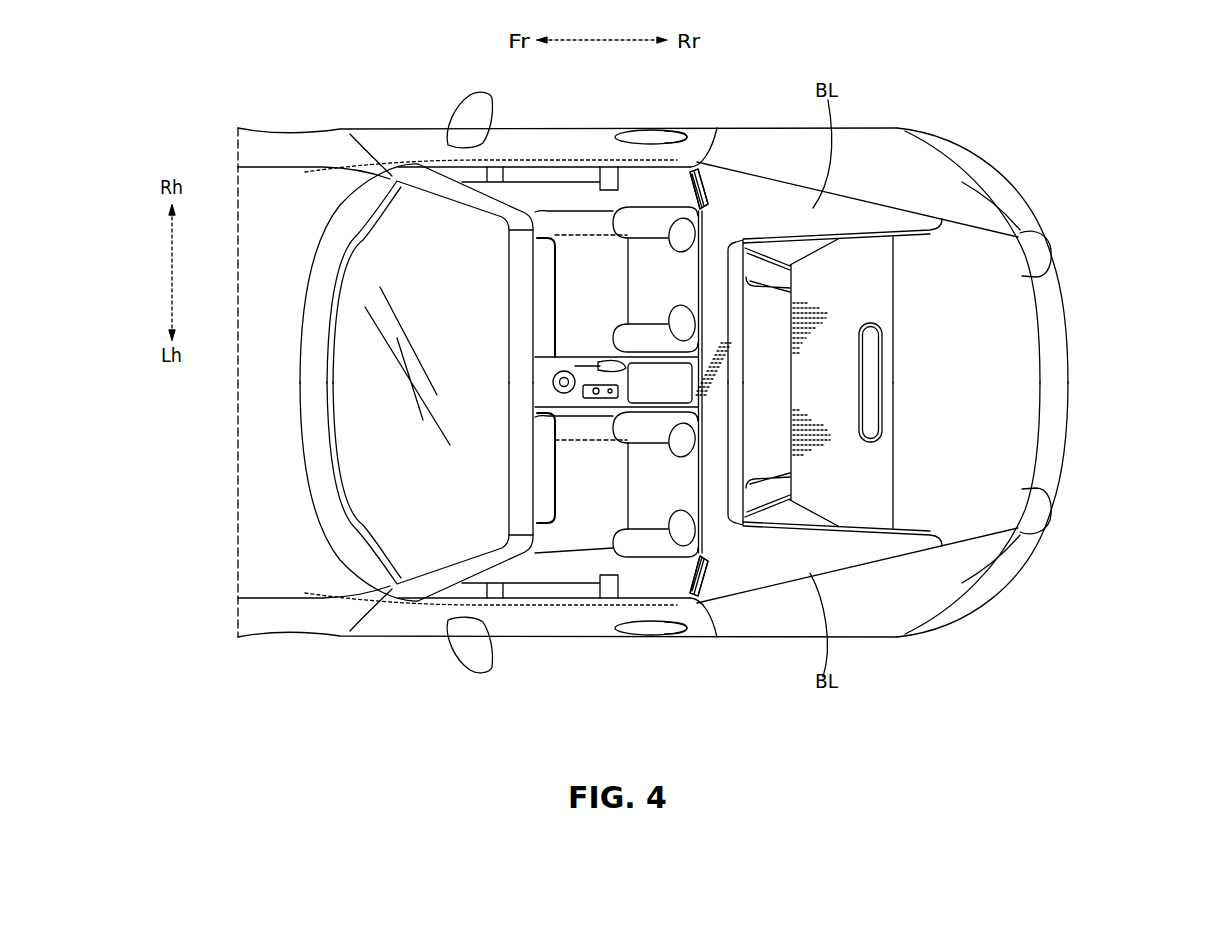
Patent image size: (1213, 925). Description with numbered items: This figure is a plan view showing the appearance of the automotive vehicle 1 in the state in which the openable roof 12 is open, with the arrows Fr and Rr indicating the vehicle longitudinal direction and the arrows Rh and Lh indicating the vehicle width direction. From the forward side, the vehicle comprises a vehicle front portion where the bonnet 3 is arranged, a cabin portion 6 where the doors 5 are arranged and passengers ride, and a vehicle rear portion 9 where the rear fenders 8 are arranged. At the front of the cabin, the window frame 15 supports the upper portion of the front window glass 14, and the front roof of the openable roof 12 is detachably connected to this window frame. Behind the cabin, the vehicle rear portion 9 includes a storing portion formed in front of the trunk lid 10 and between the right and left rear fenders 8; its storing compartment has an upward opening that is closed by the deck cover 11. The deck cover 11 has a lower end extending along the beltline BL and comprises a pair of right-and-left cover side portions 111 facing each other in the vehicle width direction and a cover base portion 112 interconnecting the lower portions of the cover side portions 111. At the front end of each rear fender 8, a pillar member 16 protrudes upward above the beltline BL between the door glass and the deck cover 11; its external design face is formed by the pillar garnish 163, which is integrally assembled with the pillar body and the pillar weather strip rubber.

The automotive vehicle 1 is at (203, 87).
The bonnet (engine hood) 3 is at (272, 203).
The door 5 is at (408, 144).
The cabin portion 6 is at (556, 656).
The rear fender 8 is at (887, 163).
The vehicle rear portion 9 is at (1063, 236).
The trunk lid 10 is at (990, 350).
The deck cover 11 is at (735, 382).
The openable roof 12 is at (767, 382).
The front window glass 14 is at (397, 510).
The window frame 15 is at (450, 570).
The pillar member 16 is at (699, 382).
The cover side portion 111 is at (758, 195).
The cover base portion 112 is at (716, 278).
The pillar garnish 163 is at (697, 162).